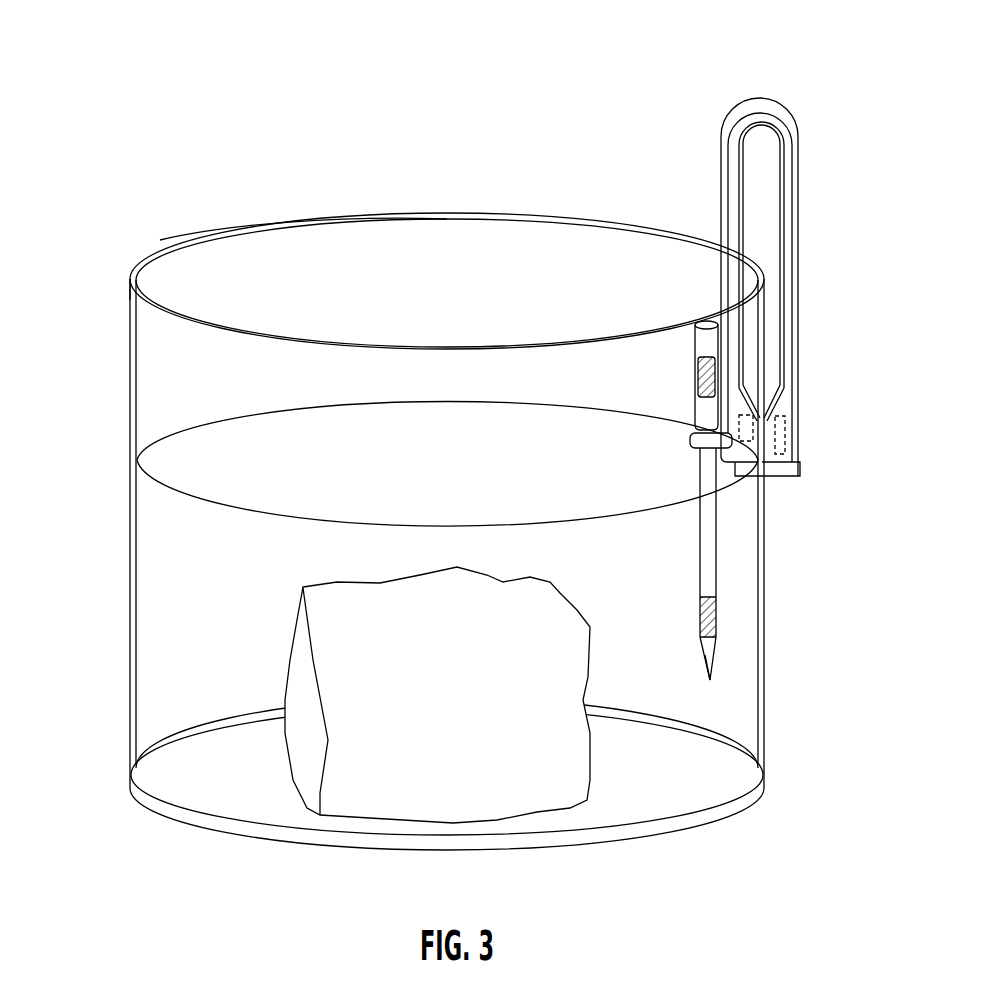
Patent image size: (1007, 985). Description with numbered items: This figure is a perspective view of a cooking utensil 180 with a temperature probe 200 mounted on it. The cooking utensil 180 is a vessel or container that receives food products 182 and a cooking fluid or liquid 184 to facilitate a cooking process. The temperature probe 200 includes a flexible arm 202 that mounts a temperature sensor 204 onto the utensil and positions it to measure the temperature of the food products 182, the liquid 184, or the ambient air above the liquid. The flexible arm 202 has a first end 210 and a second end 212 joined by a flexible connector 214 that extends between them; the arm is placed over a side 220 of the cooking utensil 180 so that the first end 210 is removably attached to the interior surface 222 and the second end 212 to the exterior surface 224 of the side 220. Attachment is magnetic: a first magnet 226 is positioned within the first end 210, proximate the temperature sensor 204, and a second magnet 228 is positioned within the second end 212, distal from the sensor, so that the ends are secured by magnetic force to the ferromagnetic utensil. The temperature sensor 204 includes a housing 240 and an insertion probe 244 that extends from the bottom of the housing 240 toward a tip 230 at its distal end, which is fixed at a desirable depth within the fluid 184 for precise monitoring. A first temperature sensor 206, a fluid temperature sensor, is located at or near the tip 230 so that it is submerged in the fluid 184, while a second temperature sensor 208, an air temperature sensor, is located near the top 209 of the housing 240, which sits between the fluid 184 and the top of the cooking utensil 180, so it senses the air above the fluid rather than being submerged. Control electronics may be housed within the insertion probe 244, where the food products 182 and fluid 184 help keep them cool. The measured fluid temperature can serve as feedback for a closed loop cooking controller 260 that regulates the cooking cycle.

The cooking utensil 180 is at (128, 395).
The food products 182 is at (450, 666).
The cooking fluid or liquid 184 is at (665, 629).
The temperature probe 200 is at (822, 118).
The flexible arm 202 is at (806, 303).
The temperature sensor 204 is at (695, 403).
The first temperature sensor 206 is at (703, 657).
The second temperature sensor 208 is at (698, 379).
The top of temperature sensor 209 is at (706, 317).
The first end 210 is at (750, 468).
The second end 212 is at (791, 450).
The flexible connector 214 is at (800, 197).
The side 220 is at (137, 460).
The interior surface 222 is at (172, 280).
The exterior surface 224 is at (125, 275).
The first magnet 226 is at (762, 433).
The second magnet 228 is at (791, 426).
The tip 230 is at (712, 679).
The housing 240 is at (695, 350).
The insertion probe 244 is at (717, 596).
The closed loop cooking controller 260 is at (695, 441).